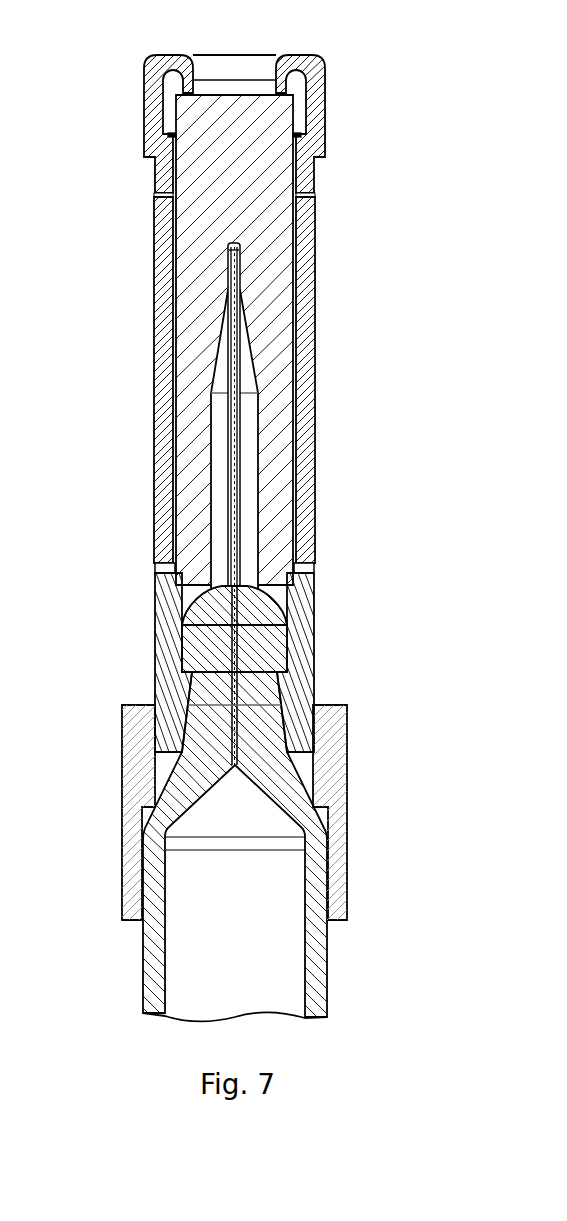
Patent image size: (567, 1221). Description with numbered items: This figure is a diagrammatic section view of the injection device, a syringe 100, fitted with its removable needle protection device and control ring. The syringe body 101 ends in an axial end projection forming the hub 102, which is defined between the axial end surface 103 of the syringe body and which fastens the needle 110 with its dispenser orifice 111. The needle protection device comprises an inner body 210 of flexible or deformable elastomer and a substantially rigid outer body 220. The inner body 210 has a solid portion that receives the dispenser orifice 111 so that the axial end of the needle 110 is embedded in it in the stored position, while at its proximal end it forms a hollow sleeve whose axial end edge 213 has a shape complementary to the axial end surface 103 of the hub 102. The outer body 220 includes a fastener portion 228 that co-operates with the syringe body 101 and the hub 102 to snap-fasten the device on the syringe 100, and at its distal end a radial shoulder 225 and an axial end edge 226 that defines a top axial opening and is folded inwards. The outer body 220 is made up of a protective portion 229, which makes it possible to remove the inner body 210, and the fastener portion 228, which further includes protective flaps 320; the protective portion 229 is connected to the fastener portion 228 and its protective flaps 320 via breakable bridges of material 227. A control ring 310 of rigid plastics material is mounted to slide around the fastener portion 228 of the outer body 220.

The syringe 100 is at (230, 781).
The syringe body 101 is at (311, 941).
The hub 102 is at (291, 646).
The axial end surface 103 is at (213, 613).
The needle 110 is at (328, 490).
The dispenser orifice 111 is at (240, 243).
The inner body 210 is at (198, 293).
The axial end edge 213 is at (196, 602).
The outer body 220 is at (230, 293).
The radial shoulder 225 is at (306, 126).
The axial end edge 226 is at (170, 64).
The breakable bridges of material 227 is at (155, 193).
The fastener portion 228 is at (297, 680).
The protective portion 229 is at (323, 127).
The control ring 310 is at (140, 762).
The protective flaps 320 is at (305, 372).